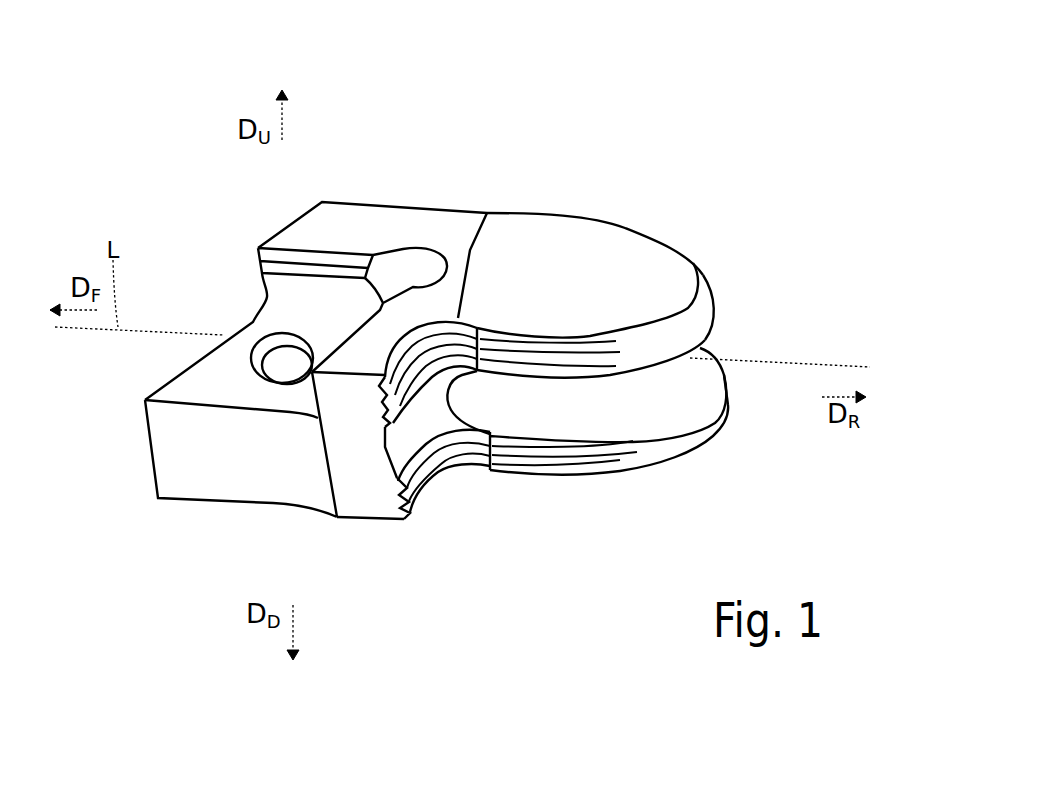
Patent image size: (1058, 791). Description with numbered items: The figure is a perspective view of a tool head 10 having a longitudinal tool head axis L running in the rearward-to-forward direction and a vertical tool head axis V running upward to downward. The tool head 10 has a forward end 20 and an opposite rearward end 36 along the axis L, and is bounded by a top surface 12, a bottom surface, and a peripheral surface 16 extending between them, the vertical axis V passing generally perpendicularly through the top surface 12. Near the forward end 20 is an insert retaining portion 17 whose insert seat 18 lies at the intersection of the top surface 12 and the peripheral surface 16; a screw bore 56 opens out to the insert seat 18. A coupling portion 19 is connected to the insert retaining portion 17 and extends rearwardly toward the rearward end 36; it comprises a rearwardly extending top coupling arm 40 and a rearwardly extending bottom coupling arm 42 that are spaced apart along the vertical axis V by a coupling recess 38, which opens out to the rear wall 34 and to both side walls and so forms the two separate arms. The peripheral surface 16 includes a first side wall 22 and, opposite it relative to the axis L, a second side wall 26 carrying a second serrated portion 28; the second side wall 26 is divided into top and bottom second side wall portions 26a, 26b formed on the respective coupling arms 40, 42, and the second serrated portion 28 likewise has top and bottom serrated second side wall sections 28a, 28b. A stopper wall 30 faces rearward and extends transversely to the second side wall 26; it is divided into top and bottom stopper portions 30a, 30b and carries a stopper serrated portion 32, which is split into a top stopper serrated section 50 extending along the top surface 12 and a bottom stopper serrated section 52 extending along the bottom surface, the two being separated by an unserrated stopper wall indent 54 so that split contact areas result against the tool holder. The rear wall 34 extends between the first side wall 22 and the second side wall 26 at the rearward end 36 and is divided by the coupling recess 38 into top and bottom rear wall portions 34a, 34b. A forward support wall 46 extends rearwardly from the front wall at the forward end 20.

The tool head 10 is at (563, 90).
The top surface 12 is at (332, 227).
The peripheral surface 16 is at (173, 458).
The insert retaining portion 17 is at (252, 233).
The insert seat 18 is at (260, 322).
The coupling portion 19 is at (467, 190).
The forward end 20 is at (133, 365).
The first side wall 22 is at (568, 215).
The second side wall 26 is at (636, 384).
The top second side wall portion 26a is at (645, 255).
The bottom second side wall portion 26b is at (572, 515).
The second serrated portion 28 is at (586, 273).
The top serrated second side wall section 28a is at (513, 357).
The bottom serrated second side wall section 28b is at (517, 462).
The stopper wall 30 is at (540, 255).
The top stopper portion 30a is at (418, 327).
The bottom stopper portion 30b is at (418, 507).
The stopper serrated portion 32 is at (422, 472).
The rear wall 34 is at (804, 274).
The top rear wall portion 34a is at (710, 297).
The bottom rear wall portion 34b is at (671, 447).
The rearward end 36 is at (720, 223).
The coupling recess 38 is at (698, 373).
The top coupling arm 40 is at (700, 315).
The bottom coupling arm 42 is at (712, 420).
The forward support wall 46 is at (225, 482).
The top stopper serrated section 50 is at (385, 443).
The bottom stopper serrated section 52 is at (430, 477).
The stopper wall indent 54 is at (398, 460).
The screw bore 56 is at (287, 374).